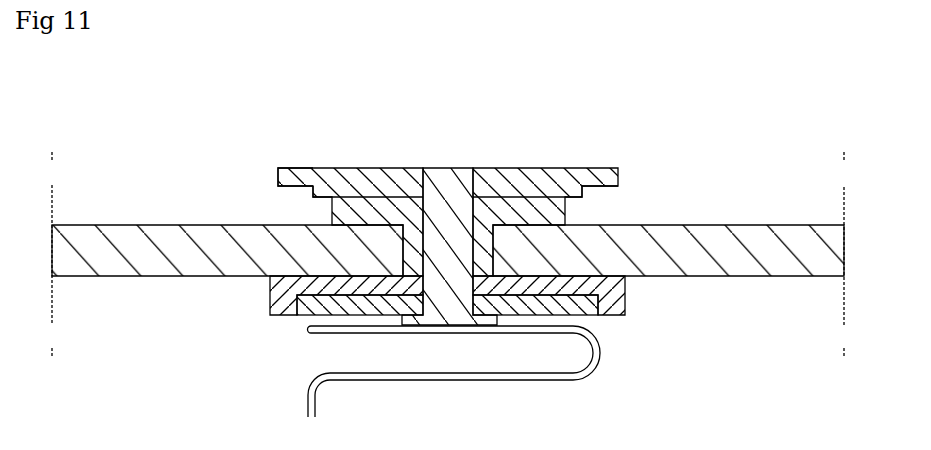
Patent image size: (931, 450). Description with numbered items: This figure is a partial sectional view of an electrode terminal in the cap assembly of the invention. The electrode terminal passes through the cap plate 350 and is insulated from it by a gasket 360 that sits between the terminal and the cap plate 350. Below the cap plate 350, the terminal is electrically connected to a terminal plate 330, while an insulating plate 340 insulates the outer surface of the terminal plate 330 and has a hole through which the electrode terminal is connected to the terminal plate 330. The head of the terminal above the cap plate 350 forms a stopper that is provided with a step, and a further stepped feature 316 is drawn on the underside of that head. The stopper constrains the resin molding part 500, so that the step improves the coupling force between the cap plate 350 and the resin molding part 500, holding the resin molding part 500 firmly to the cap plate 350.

The step portion 316 is at (312, 191).
The terminal plate 330 is at (288, 313).
The insulating plate 340 is at (271, 296).
The cap plate 350 is at (735, 237).
The gasket 360 is at (563, 212).
The resin molding part 500 is at (808, 141).